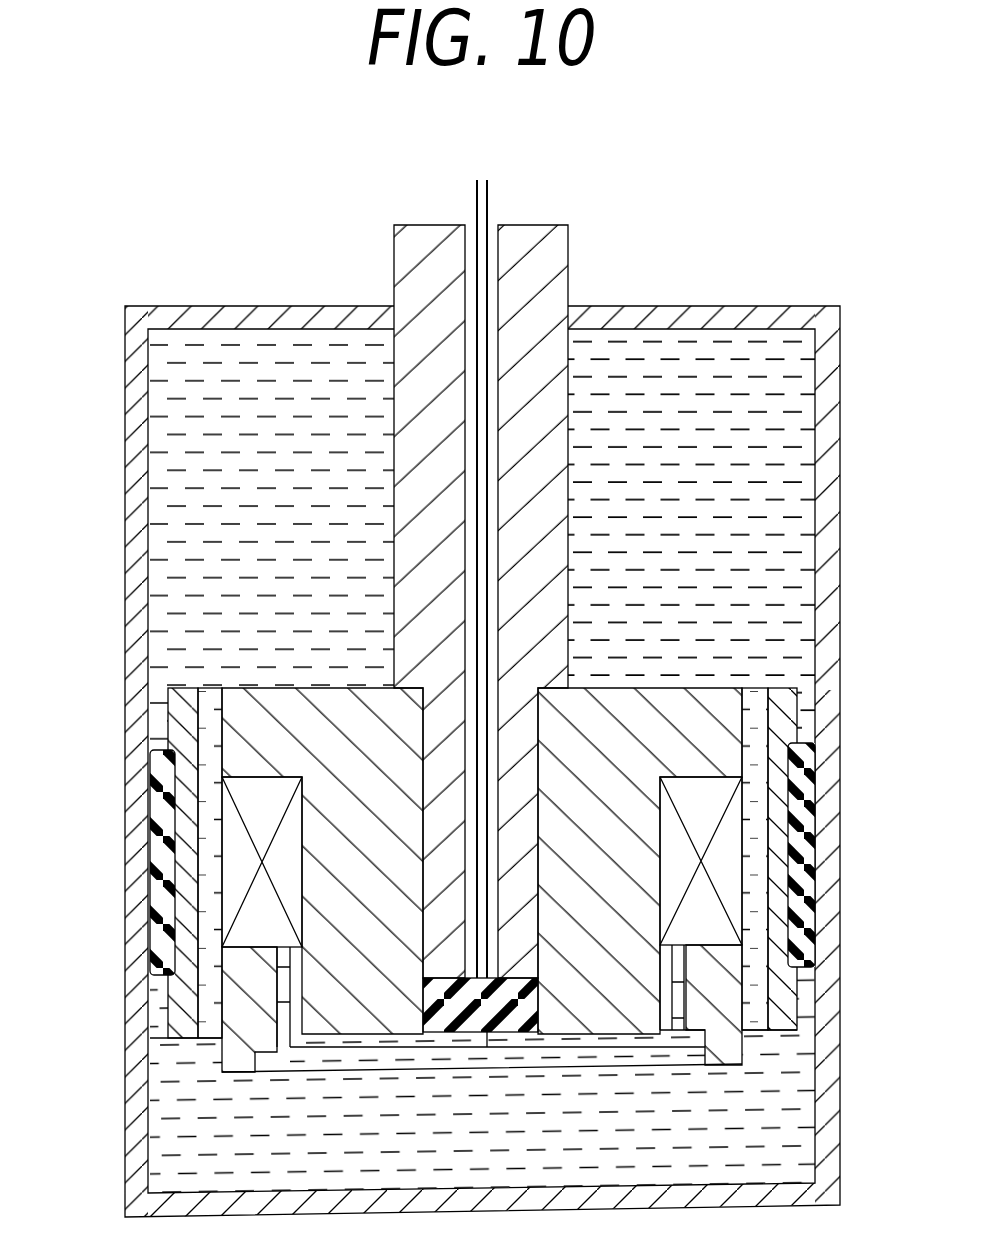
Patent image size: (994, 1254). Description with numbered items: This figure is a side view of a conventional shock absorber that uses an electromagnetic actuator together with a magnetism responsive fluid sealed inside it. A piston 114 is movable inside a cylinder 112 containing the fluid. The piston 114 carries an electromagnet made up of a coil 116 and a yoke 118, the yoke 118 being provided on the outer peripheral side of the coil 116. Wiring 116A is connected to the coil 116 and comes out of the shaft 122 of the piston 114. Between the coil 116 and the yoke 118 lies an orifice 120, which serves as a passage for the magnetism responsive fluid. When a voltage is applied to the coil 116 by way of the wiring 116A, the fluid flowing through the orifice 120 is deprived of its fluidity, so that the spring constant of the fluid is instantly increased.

The cylinder 112 is at (127, 653).
The piston 114 is at (331, 690).
The coil 116 is at (257, 777).
The wiring 116A is at (478, 249).
The yoke 118 is at (171, 690).
The orifice 120 is at (209, 692).
The shaft 122 is at (571, 276).